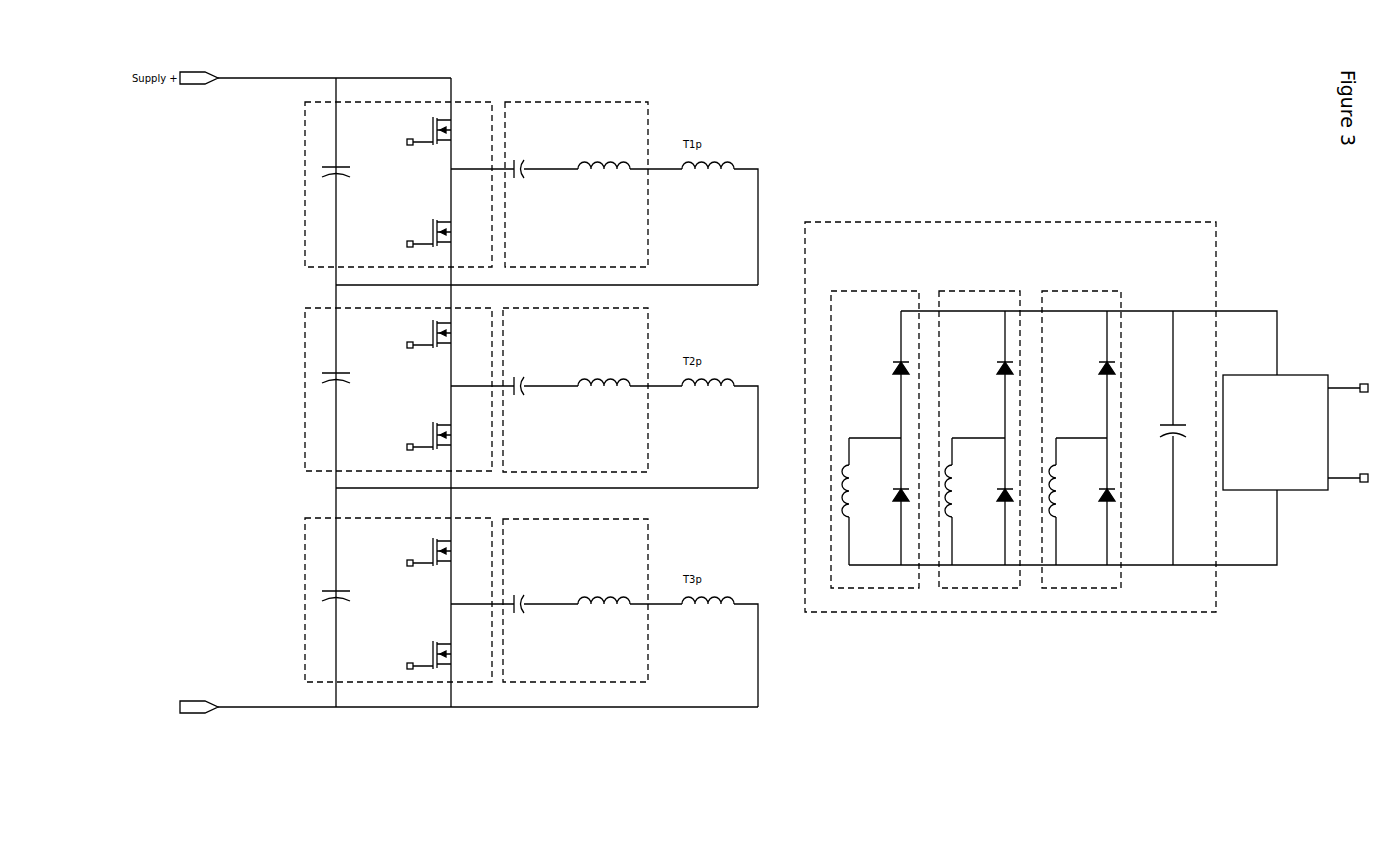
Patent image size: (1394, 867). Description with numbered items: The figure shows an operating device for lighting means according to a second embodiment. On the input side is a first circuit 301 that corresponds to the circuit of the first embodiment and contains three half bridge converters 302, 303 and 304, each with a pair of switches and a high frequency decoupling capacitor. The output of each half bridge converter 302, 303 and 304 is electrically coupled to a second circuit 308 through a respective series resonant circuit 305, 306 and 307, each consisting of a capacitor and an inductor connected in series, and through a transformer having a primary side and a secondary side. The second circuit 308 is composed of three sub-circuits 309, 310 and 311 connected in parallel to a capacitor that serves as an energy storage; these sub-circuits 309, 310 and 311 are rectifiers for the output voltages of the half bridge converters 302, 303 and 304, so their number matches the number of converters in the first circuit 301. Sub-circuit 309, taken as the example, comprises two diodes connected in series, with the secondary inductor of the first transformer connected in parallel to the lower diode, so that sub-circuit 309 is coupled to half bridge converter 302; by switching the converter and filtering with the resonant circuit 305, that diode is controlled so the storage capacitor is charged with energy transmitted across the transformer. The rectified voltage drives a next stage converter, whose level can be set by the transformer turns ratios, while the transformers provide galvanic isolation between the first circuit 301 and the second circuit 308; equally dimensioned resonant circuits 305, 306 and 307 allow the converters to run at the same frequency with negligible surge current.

The circuit 301 is at (445, 722).
The half bridge converter 302 is at (364, 184).
The half bridge converter 303 is at (364, 389).
The half bridge converter 304 is at (364, 600).
The series resonant circuit 305 is at (581, 184).
The series resonant circuit 306 is at (581, 390).
The series resonant circuit 307 is at (581, 600).
The second circuit 308 is at (1086, 437).
The sub-circuit 309 is at (883, 418).
The sub-circuit 310 is at (989, 418).
The sub-circuit 311 is at (1092, 418).